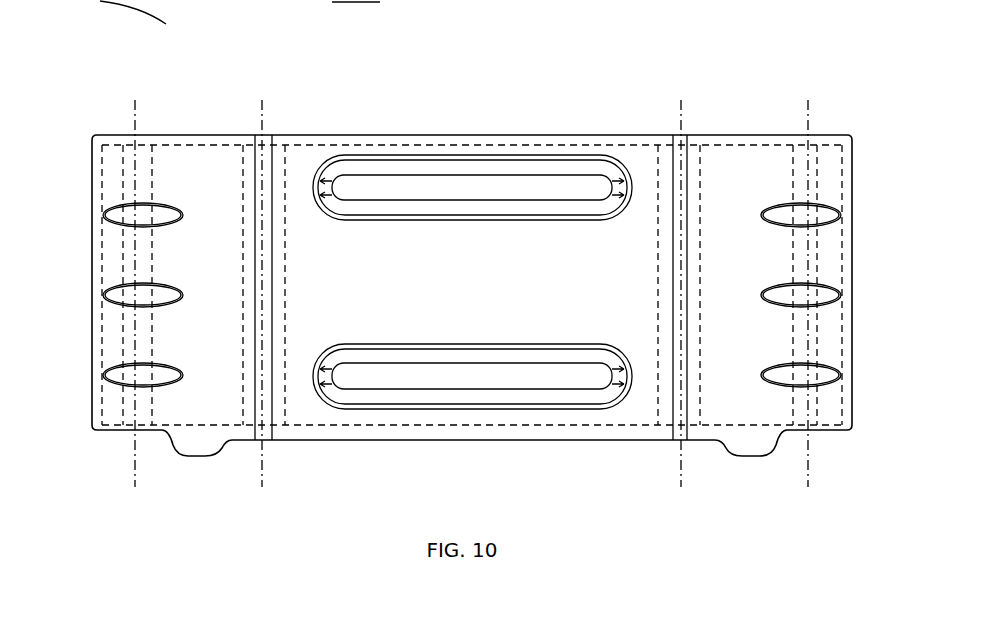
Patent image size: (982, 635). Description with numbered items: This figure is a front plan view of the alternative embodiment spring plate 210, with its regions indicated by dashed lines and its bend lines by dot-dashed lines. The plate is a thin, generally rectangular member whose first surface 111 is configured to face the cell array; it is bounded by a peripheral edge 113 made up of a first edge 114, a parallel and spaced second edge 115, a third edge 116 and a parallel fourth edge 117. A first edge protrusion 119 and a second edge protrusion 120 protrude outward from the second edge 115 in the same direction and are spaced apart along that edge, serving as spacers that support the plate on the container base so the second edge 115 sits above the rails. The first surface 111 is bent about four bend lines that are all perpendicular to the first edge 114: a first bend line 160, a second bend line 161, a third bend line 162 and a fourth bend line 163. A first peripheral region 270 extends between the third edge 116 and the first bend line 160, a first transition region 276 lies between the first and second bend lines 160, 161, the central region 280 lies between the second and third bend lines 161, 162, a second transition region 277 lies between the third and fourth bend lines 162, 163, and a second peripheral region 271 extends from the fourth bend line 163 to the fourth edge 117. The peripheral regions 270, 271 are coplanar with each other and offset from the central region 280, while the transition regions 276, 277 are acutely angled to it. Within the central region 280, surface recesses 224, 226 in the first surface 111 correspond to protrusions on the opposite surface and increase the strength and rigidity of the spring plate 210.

The spring plate 210 is at (513, 72).
The first surface 111 is at (297, 440).
The peripheral edge 113 is at (445, 135).
The first edge 114 is at (445, 135).
The second edge 115 is at (472, 442).
The third edge 116 is at (93, 292).
The fourth edge 117 is at (852, 270).
The first edge protrusion 119 is at (190, 456).
The second edge protrusion 120 is at (752, 456).
The first bend line 160 is at (133, 112).
The second bend line 161 is at (262, 118).
The third bend line 162 is at (678, 117).
The fourth bend line 163 is at (807, 122).
The surface recess 224 is at (473, 192).
The surface recess 226 is at (572, 408).
The first peripheral region 270 is at (93, 160).
The second peripheral region 271 is at (842, 150).
The first transition region 276 is at (183, 135).
The second transition region 277 is at (764, 142).
The central region 280 is at (331, 135).